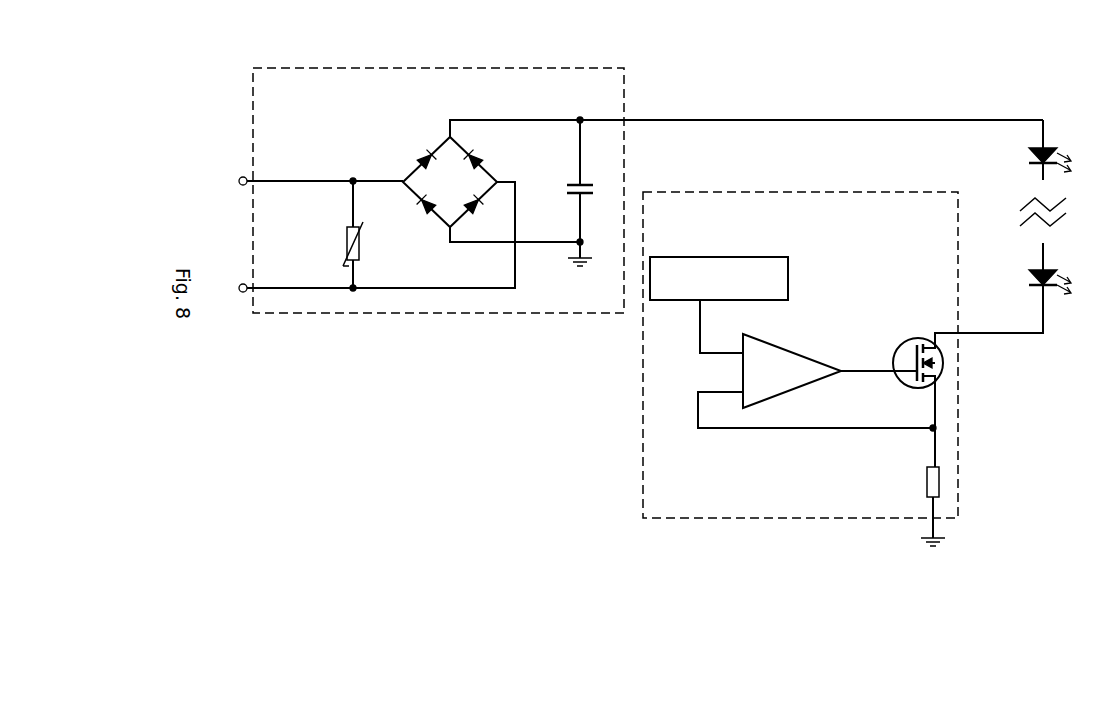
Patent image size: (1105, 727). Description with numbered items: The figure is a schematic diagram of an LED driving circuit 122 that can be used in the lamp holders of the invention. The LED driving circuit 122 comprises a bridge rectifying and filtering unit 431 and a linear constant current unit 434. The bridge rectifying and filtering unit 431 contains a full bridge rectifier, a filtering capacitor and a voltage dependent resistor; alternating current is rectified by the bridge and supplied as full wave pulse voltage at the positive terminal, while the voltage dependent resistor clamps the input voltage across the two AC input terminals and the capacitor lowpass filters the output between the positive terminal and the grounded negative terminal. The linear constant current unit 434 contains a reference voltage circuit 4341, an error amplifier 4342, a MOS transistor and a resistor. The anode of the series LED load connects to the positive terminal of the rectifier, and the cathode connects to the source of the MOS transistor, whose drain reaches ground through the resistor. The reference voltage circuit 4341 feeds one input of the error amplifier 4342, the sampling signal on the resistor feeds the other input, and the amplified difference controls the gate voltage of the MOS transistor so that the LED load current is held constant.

The bridge rectifying and filtering unit 431 is at (577, 68).
The linear constant current unit 434 is at (843, 345).
The reference voltage circuit 4341 is at (790, 280).
The error amplifier 4342 is at (773, 348).
The LED driving circuit 122 is at (1013, 590).